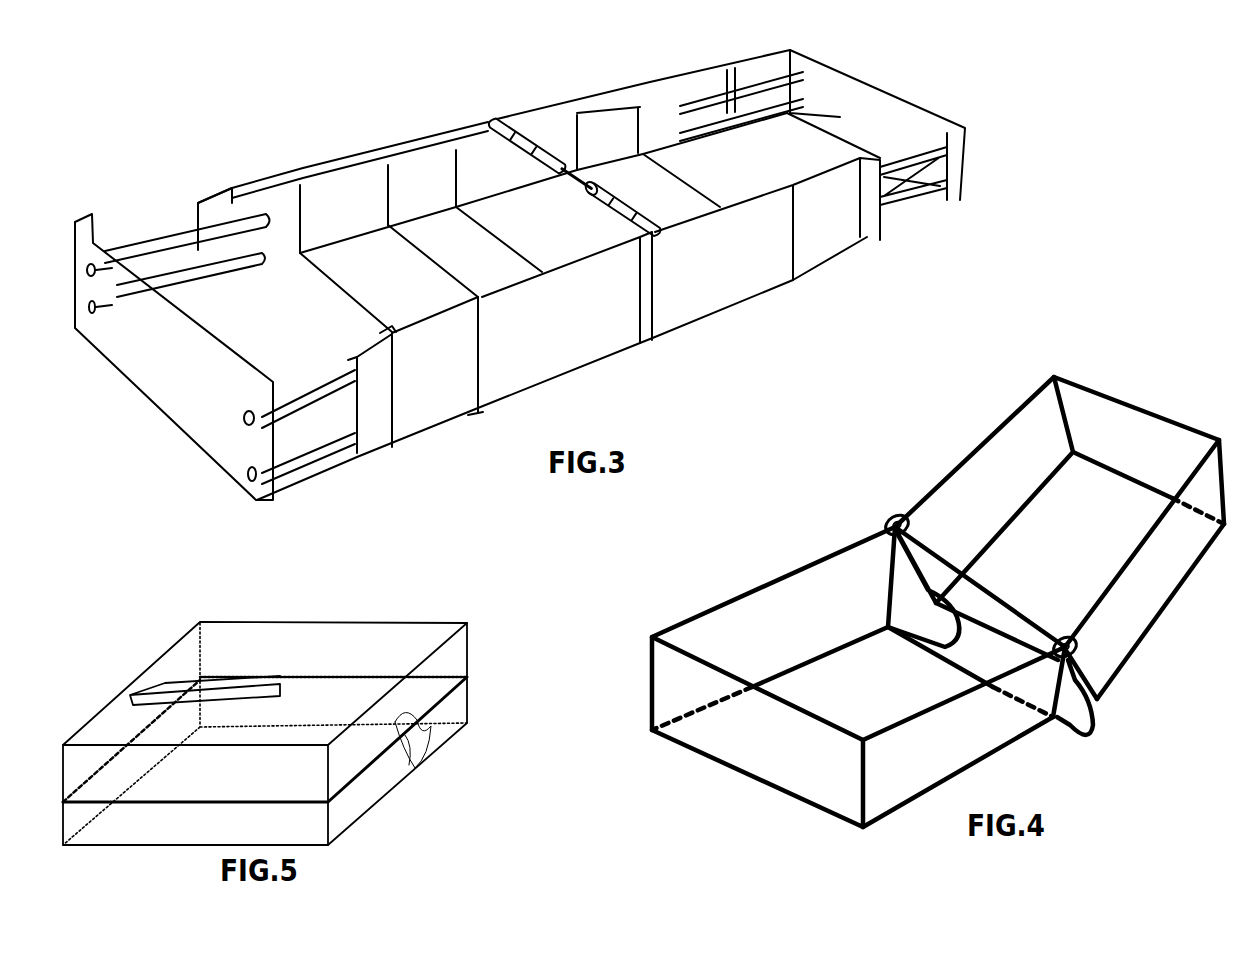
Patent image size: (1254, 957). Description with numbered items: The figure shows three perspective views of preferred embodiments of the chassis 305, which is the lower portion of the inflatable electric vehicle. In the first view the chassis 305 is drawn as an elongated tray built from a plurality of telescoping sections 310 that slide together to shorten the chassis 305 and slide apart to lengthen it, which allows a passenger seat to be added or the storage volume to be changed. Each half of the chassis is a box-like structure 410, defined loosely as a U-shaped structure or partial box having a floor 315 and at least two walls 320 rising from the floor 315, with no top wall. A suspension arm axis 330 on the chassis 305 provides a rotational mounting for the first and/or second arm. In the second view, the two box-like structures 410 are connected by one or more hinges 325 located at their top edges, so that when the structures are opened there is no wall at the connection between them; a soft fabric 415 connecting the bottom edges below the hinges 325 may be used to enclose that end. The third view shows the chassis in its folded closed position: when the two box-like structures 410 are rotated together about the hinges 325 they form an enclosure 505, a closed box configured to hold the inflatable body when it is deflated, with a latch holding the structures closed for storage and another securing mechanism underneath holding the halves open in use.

In FIG. 3, the chassis 305 is at (568, 299).
In FIG. 4, the chassis 305 is at (938, 602).
In FIG. 3, the telescoping sections 310 is at (538, 345).
In FIG. 3, the floor 315 is at (661, 178).
In FIG. 3, the walls 320 is at (618, 138).
In FIG. 3, the hinges 325 is at (593, 197).
In FIG. 4, the hinges 325 is at (1057, 635).
In FIG. 5, the hinges 325 is at (150, 720).
In FIG. 3, the suspension arm axis 330 is at (153, 247).
In FIG. 4, the box-like structures 410 is at (973, 720).
In FIG. 4, the soft fabric 415 is at (990, 667).
In FIG. 5, the enclosure 505 is at (236, 758).